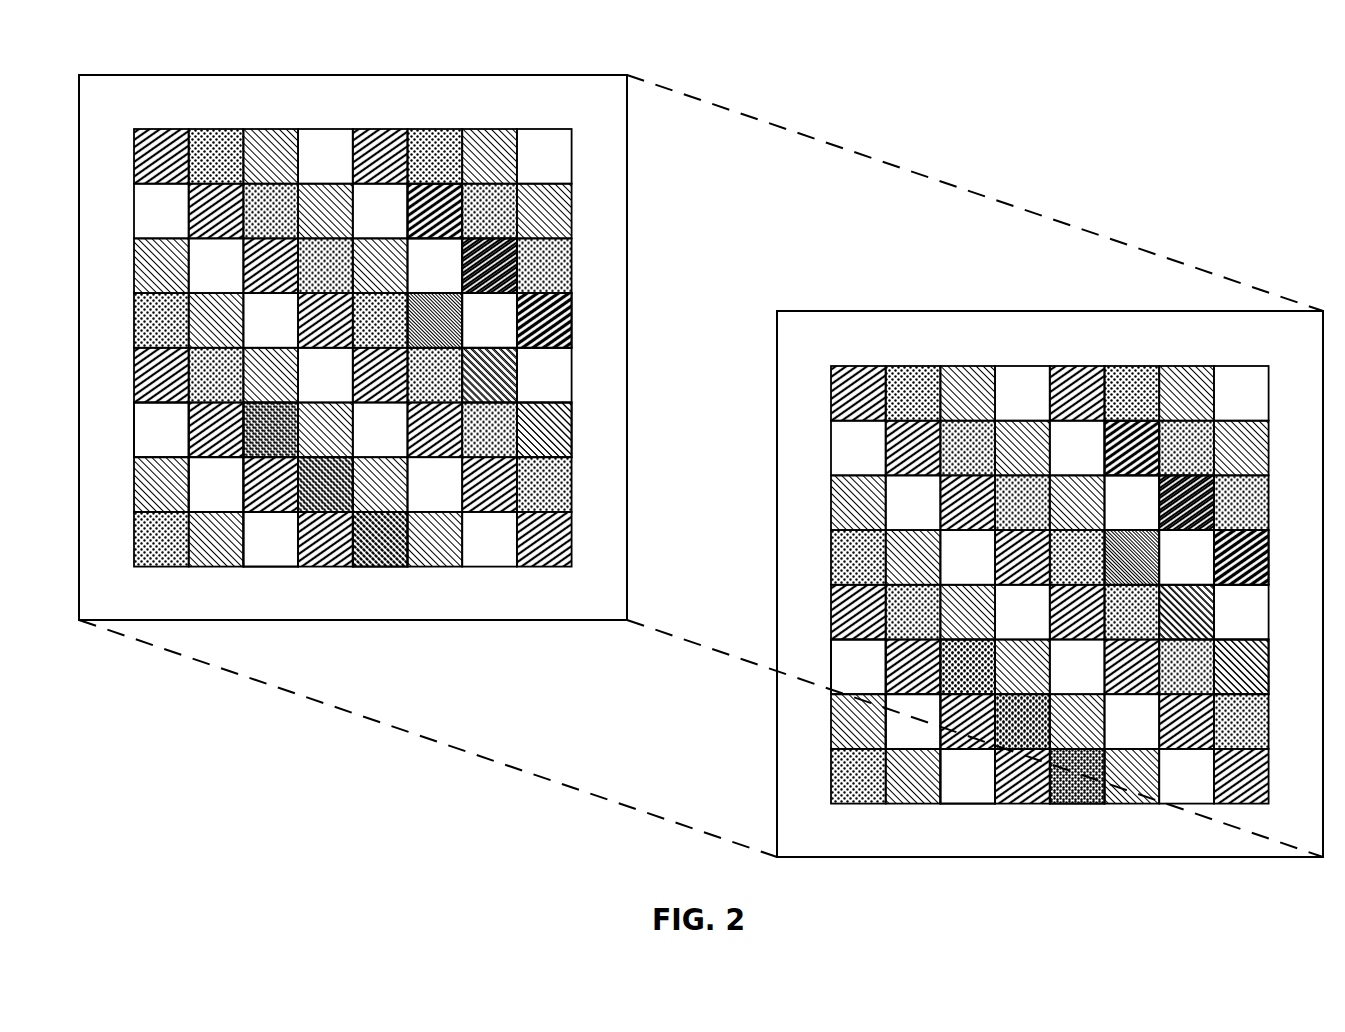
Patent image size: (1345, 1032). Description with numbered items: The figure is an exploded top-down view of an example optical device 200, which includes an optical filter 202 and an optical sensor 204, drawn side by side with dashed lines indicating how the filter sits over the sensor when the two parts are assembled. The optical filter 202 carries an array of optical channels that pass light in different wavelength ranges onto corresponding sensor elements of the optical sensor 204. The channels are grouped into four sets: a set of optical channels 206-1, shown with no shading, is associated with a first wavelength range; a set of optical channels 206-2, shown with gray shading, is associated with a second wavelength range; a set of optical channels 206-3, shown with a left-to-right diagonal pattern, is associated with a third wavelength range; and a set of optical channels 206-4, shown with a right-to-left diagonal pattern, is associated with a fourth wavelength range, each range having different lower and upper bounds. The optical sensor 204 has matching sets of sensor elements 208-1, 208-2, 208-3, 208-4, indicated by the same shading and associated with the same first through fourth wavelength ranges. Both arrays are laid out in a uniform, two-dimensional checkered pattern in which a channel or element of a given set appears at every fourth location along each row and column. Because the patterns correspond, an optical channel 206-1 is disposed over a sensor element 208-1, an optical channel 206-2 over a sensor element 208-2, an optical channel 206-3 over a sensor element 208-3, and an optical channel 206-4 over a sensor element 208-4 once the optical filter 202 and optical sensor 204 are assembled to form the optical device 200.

The optical device 200 is at (216, 42).
The optical filter 202 is at (353, 347).
The optical sensor 204 is at (1050, 584).
The set of optical channels 206-1 is at (156, 440).
The set of optical channels 206-2 is at (270, 440).
The set of optical channels 206-3 is at (427, 320).
The set of optical channels 206-4 is at (436, 211).
The set of sensor elements 208-1 is at (860, 673).
The set of sensor elements 208-2 is at (974, 672).
The set of sensor elements 208-3 is at (1130, 563).
The set of sensor elements 208-4 is at (1240, 555).